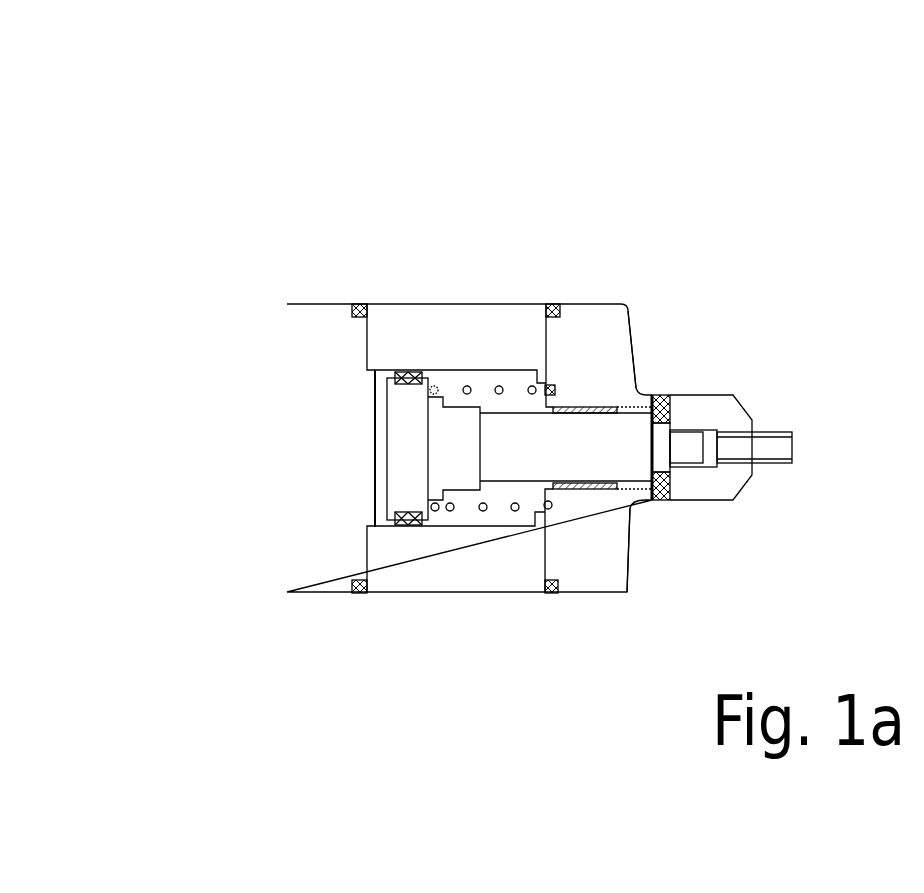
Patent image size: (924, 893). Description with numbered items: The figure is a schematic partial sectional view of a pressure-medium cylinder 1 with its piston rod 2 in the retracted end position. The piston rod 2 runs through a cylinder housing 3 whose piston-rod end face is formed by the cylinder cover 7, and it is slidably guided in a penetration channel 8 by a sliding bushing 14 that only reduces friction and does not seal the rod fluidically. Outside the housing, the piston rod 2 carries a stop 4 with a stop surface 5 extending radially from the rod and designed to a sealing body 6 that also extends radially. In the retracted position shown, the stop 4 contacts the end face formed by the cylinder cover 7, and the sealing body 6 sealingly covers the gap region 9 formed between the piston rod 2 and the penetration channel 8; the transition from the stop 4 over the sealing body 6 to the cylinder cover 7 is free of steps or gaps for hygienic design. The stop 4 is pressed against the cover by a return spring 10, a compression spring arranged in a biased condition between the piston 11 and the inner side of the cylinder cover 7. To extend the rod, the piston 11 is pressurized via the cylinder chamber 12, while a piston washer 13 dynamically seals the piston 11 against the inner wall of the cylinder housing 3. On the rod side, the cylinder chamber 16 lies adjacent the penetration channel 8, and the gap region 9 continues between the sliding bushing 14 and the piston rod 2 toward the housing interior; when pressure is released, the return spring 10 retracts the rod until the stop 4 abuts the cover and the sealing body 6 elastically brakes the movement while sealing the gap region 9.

The pressure-medium cylinder 1 is at (250, 283).
The piston rod 2 is at (680, 450).
The cylinder housing 3 is at (408, 592).
The stop 4 is at (747, 408).
The stop surface 5 is at (672, 493).
The sealing body 6 is at (660, 395).
The cylinder cover 7 is at (620, 323).
The penetration channel 8 is at (627, 490).
The gap region 9 is at (627, 405).
The return spring 10 is at (467, 387).
The piston 11 is at (388, 483).
The cylinder chamber 12 is at (380, 453).
The piston washer 13 is at (405, 370).
The sliding bushing 14 is at (548, 385).
The cylinder chamber 16 is at (463, 513).